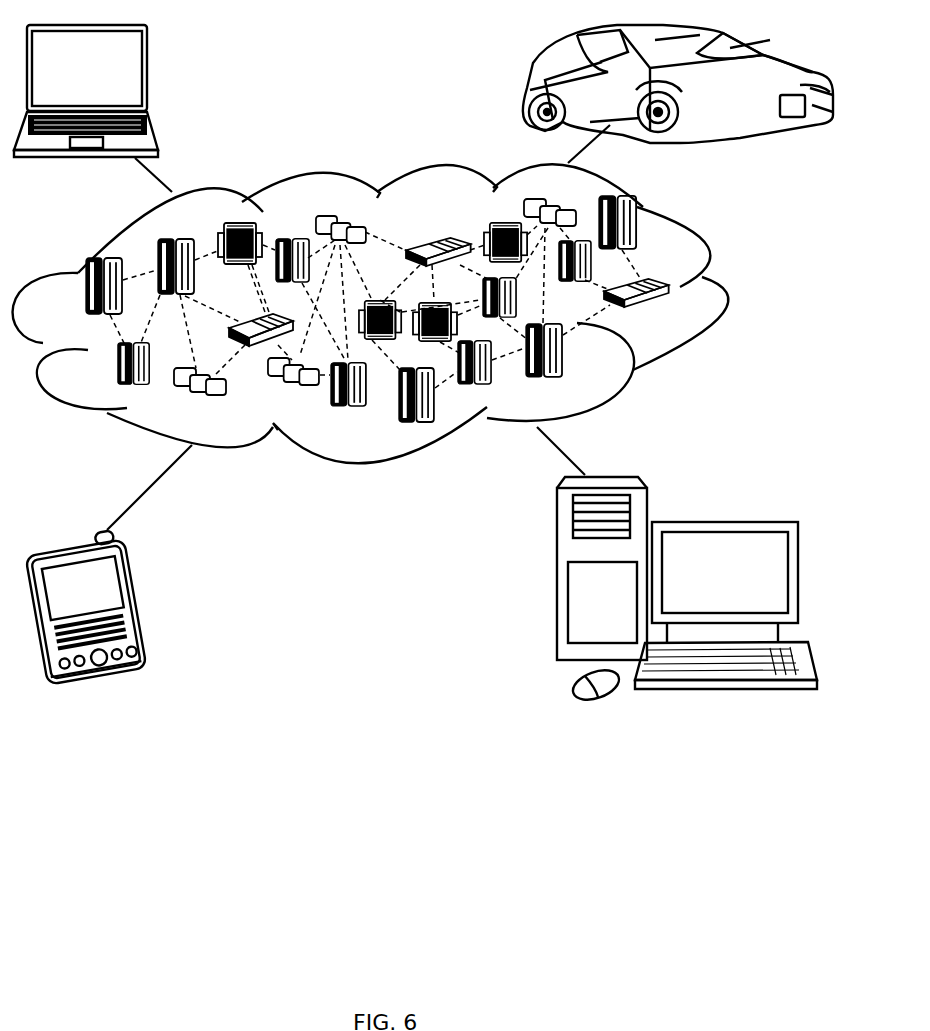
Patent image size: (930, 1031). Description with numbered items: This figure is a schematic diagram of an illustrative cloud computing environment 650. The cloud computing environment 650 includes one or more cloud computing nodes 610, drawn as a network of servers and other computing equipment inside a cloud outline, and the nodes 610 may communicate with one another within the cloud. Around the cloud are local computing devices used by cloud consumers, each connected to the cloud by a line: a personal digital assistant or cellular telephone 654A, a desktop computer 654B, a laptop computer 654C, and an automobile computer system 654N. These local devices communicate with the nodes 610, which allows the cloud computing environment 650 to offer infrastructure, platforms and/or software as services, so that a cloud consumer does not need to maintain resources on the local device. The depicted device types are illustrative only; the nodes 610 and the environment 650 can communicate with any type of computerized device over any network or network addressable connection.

The cloud computing environment 650 is at (723, 290).
The cloud computing nodes 610 is at (675, 314).
The personal digital assistant (PDA) or cellular telephone 654A is at (138, 603).
The desktop computer 654B is at (722, 521).
The laptop computer 654C is at (148, 73).
The automobile computer system 654N is at (532, 88).